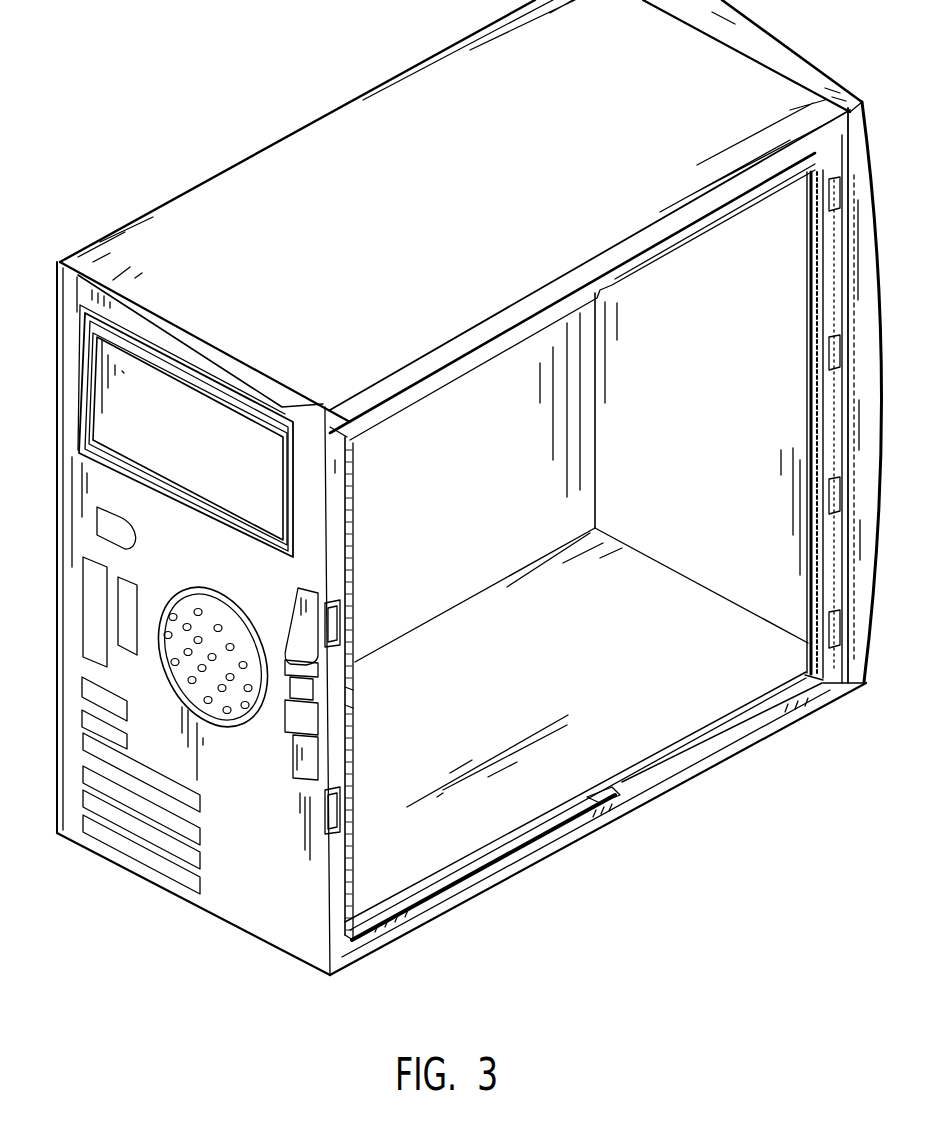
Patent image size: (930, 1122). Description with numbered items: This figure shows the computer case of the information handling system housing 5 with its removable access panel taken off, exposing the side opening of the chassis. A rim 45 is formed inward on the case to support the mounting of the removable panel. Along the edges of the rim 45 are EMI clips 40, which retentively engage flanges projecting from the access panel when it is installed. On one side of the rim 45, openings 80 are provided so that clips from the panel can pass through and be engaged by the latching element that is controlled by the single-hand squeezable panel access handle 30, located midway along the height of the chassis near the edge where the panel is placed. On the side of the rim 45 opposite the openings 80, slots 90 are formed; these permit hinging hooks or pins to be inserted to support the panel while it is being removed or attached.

The information handling system housing 5 is at (57, 347).
The squeezable panel access handle 30 is at (287, 640).
The EMI clips 40 is at (687, 252).
The rim 45 is at (612, 253).
The openings 80 is at (350, 788).
The slots 90 is at (830, 200).